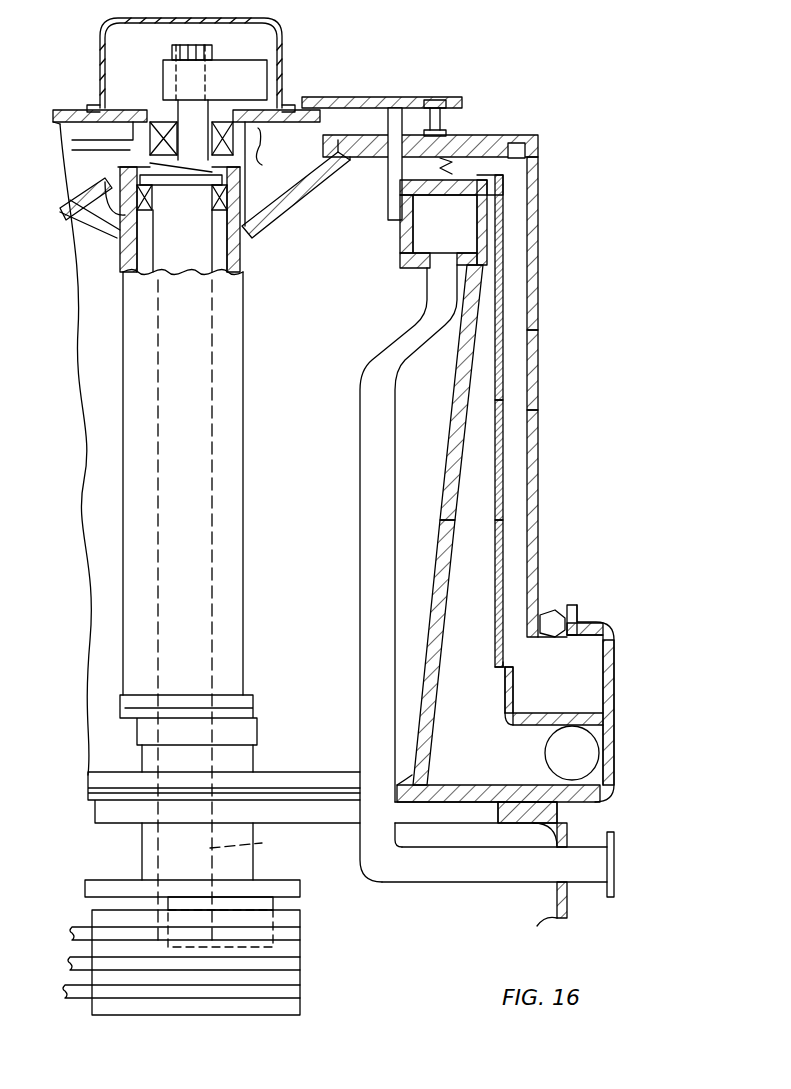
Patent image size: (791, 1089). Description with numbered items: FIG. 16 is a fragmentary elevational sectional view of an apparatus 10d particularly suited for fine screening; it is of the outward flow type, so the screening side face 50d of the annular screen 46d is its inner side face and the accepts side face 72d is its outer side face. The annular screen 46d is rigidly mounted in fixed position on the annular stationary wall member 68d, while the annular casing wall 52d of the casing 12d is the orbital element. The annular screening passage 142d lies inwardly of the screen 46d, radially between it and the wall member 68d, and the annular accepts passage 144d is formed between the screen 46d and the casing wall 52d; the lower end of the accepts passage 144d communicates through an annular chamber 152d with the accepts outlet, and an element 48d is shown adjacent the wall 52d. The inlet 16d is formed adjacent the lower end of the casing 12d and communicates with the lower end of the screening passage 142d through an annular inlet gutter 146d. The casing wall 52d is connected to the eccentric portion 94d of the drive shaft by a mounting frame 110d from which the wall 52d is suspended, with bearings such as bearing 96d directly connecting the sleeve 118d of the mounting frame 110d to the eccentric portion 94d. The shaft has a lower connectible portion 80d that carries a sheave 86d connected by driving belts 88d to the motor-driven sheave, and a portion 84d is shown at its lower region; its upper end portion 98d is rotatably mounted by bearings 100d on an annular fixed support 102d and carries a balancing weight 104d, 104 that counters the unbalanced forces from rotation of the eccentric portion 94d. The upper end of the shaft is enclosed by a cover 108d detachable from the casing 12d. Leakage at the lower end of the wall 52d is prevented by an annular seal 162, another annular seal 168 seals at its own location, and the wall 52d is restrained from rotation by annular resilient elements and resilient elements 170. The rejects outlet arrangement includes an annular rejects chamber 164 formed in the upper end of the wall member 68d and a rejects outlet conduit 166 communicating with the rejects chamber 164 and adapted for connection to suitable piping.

The cover 108d is at (279, 26).
The balancing weight 104d is at (258, 73).
The end portion 98d is at (183, 128).
The resilient elements 170 is at (445, 125).
The mounting frame 110d is at (532, 132).
The casing 12d is at (540, 200).
The apparatus 10d is at (552, 272).
The inner liner 48d is at (500, 322).
The casing wall 52d is at (538, 383).
The accepts passage 144d is at (518, 428).
The accepts side face 72d is at (500, 480).
The screening passage 142d is at (482, 540).
The screen 46d is at (505, 572).
The annular seal 162 is at (570, 603).
The annular chamber 152d is at (590, 680).
The inlet 16d is at (606, 740).
The screening side face 50d is at (490, 638).
The wall member 68d is at (437, 700).
The inlet gutter 146d is at (480, 768).
The rejects outlet conduit 166 is at (372, 490).
The rejects chamber 164 is at (418, 232).
The annular seal 168 is at (468, 166).
The annular fixed support 102d is at (250, 176).
The bearings 100d is at (280, 190).
The sleeve 118d is at (128, 186).
The bearing 96d is at (220, 197).
The eccentric portion 94d is at (210, 480).
The neck 84d is at (138, 858).
The connectible portion 80d is at (248, 843).
The balancing weight 104 is at (275, 905).
The driving belts 88d is at (302, 963).
The sheave 86d is at (257, 1003).